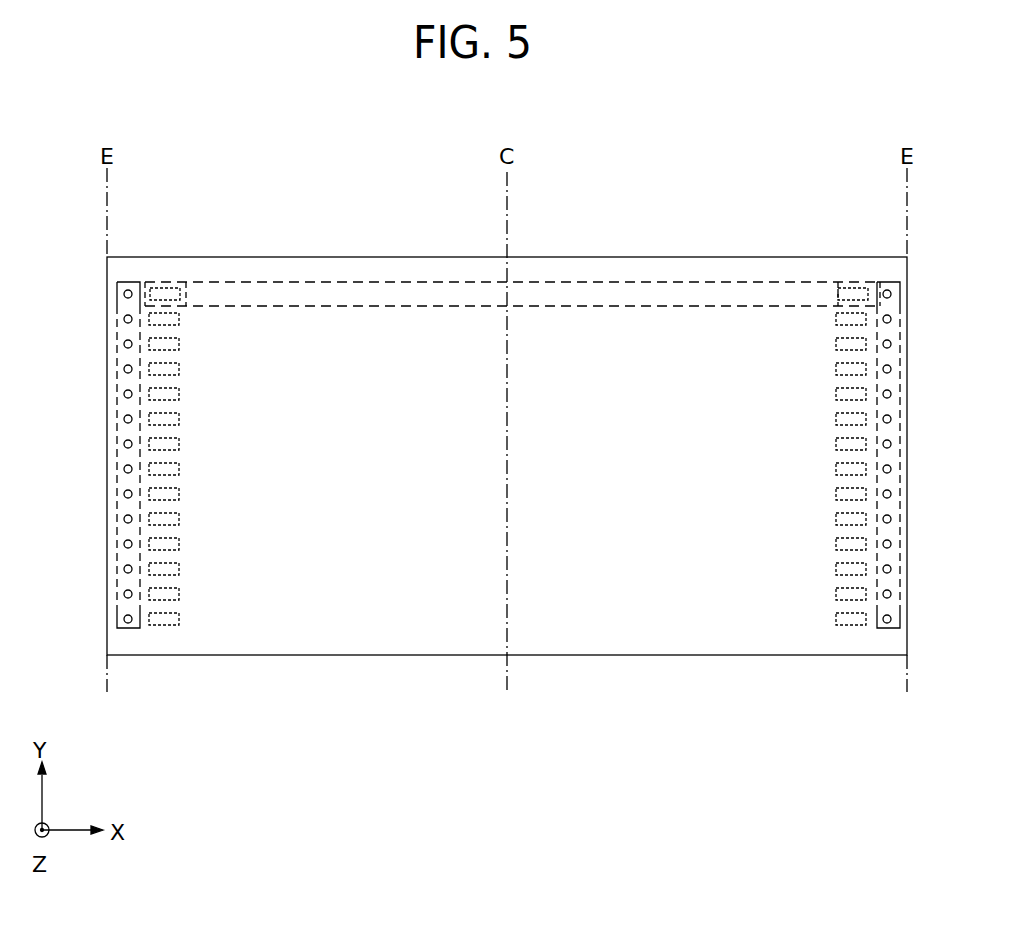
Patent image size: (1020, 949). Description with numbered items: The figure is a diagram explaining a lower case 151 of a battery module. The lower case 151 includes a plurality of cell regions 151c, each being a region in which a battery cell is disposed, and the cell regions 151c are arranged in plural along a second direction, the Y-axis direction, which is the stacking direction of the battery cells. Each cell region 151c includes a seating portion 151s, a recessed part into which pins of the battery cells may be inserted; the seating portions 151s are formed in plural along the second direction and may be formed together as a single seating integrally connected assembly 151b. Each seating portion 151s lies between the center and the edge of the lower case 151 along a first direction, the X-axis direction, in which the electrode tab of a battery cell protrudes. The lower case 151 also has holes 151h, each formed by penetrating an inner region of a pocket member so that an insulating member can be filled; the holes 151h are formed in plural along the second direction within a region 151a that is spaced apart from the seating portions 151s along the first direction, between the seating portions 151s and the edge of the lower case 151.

The lower case 151 is at (410, 247).
The region spaced apart from the seating portion 151a is at (120, 635).
The seating integrally connected assembly 151b is at (162, 635).
The cell region 151c is at (293, 282).
The hole 151h is at (128, 288).
The seating portion 151s is at (165, 286).